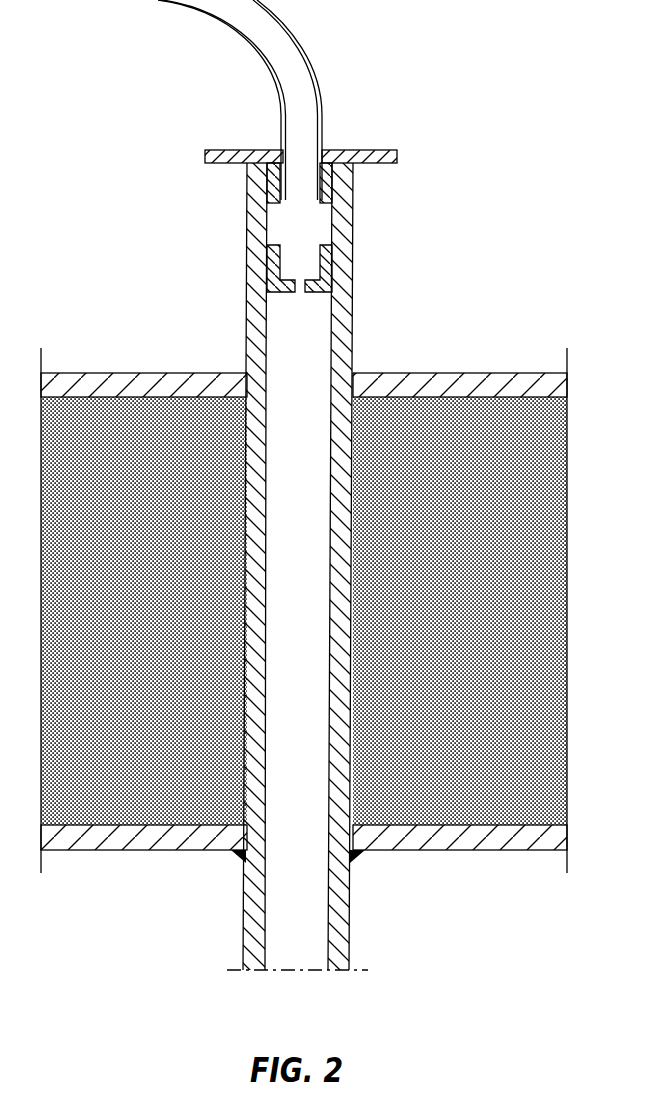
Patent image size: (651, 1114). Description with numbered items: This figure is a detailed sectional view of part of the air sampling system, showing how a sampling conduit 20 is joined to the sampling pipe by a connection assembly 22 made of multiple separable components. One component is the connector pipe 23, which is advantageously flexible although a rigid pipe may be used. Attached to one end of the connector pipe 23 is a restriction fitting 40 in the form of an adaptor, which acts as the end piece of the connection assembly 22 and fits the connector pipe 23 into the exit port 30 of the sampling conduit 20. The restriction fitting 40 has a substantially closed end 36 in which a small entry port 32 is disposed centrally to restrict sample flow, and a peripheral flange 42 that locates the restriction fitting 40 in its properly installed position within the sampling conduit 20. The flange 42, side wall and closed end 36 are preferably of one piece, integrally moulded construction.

The sampling conduit 20 is at (338, 922).
The connection assembly 22 is at (300, 188).
The connector pipe 23 is at (298, 36).
The exit port 30 is at (235, 185).
The small entry port 32 is at (303, 293).
The substantially closed end 36 is at (281, 294).
The restriction fitting 40 is at (327, 193).
The peripheral flange 42 is at (397, 156).